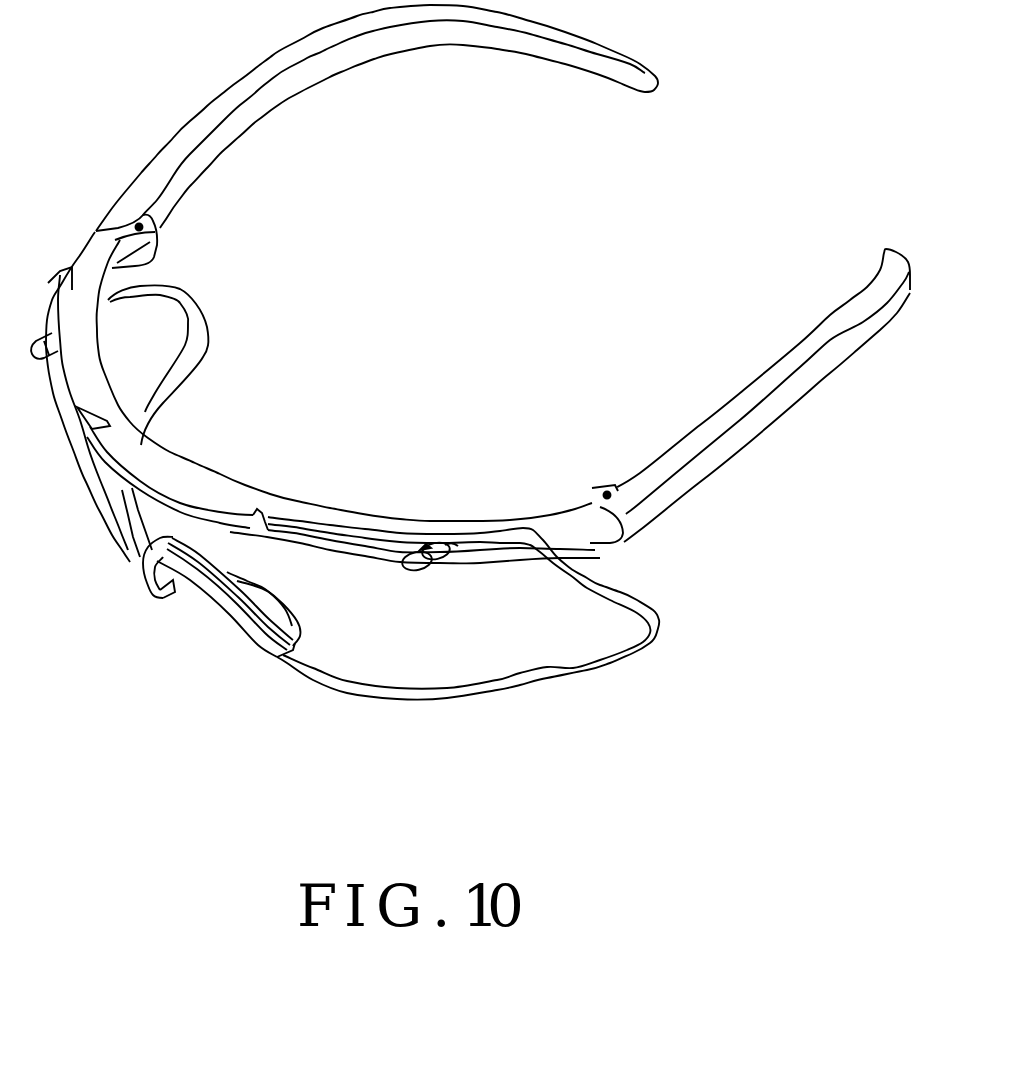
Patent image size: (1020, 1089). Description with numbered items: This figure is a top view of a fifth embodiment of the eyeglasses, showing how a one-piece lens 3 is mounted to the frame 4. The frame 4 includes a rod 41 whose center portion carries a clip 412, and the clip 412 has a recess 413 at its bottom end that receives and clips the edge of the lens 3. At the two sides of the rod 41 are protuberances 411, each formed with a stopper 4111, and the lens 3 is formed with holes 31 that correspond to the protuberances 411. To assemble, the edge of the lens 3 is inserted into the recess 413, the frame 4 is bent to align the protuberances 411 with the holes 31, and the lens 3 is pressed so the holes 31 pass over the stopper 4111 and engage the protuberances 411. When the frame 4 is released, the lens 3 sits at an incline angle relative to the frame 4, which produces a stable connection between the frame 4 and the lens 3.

The lens 3 is at (547, 655).
The holes 31 is at (450, 547).
The frame 4 is at (445, 329).
The rod 41 is at (237, 480).
The protuberances 411 is at (430, 557).
The stopper 4111 is at (413, 563).
The clip 412 is at (163, 490).
The recess 413 is at (257, 513).